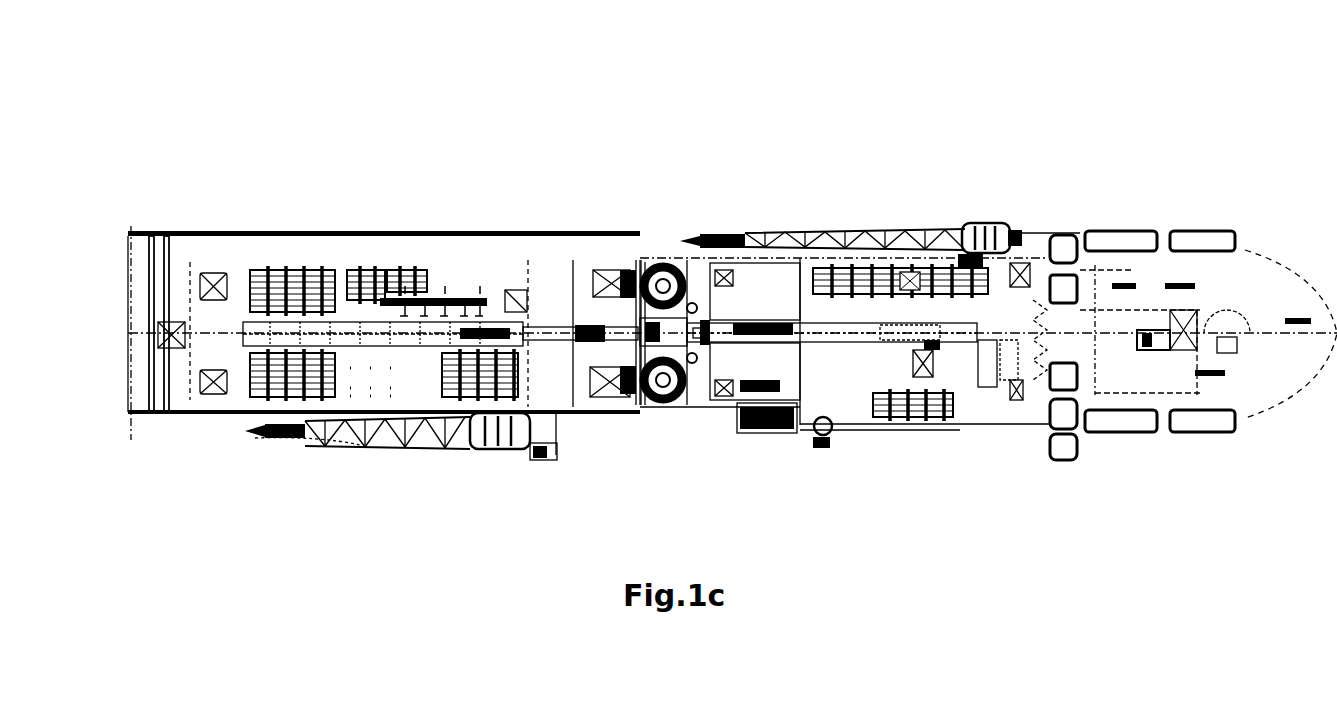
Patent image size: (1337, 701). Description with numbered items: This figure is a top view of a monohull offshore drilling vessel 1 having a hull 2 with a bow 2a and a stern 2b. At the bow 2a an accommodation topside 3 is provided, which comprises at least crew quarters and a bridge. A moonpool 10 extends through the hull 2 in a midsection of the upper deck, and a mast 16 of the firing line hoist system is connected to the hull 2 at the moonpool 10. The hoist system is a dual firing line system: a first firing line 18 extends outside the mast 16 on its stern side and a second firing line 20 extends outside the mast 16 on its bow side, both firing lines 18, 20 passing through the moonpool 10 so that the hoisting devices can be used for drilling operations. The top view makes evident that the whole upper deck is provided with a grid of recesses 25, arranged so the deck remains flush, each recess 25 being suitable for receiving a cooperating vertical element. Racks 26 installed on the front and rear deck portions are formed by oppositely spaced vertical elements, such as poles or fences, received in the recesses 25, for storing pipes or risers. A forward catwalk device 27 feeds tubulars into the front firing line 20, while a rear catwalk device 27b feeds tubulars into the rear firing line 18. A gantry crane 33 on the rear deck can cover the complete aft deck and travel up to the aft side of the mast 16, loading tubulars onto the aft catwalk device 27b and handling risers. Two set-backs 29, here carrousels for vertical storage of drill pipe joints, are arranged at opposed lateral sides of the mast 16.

The monohull offshore drilling vessel 1 is at (677, 111).
The hull 2 is at (538, 231).
The bow 2a is at (1286, 258).
The stern 2b is at (150, 225).
The accommodation topside 3 is at (1140, 283).
The moonpool 10 is at (684, 320).
The mast 16 is at (910, 332).
The first firing line 18 is at (577, 322).
The second firing line 20 is at (688, 325).
The recesses 25 is at (480, 270).
The racks 26 is at (375, 283).
The catwalk device 27 is at (923, 262).
The catwalk device 27b is at (390, 333).
The set-backs 29 is at (662, 265).
The gantry crane 33 is at (158, 273).